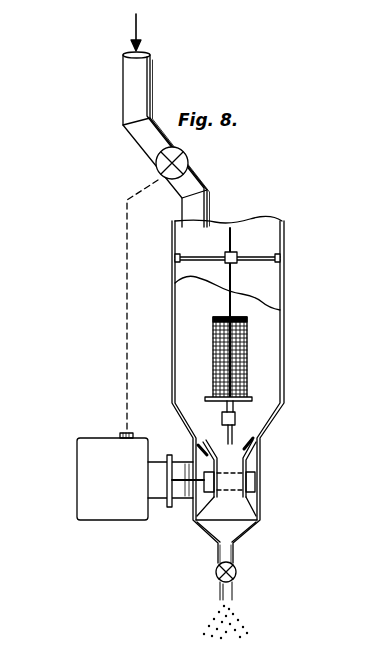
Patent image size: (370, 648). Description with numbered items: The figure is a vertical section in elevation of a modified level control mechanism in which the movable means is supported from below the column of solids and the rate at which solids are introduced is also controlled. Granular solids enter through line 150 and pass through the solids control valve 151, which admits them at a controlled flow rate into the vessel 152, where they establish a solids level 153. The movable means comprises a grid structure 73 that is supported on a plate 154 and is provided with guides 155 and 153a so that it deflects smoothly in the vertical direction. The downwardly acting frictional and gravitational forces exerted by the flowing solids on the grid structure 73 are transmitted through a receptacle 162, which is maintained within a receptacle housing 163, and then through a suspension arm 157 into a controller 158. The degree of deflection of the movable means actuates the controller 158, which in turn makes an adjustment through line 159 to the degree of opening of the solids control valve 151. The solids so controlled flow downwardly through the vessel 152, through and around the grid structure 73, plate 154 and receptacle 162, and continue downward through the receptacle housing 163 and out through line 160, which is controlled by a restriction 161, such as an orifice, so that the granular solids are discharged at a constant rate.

The line 150 is at (122, 77).
The solids control valve 151 is at (190, 163).
The vessel 152 is at (286, 238).
The solids level 153 is at (265, 306).
The guide 153a is at (257, 434).
The plate 154 is at (253, 399).
The guide 155 is at (237, 253).
The suspension arm 157 is at (190, 482).
The controller 158 is at (82, 494).
The line 159 is at (126, 284).
The line 160 is at (234, 553).
The restriction 161 is at (238, 572).
The receptacle 162 is at (248, 467).
The receptacle housing 163 is at (261, 497).
The grid structure 73 is at (249, 340).